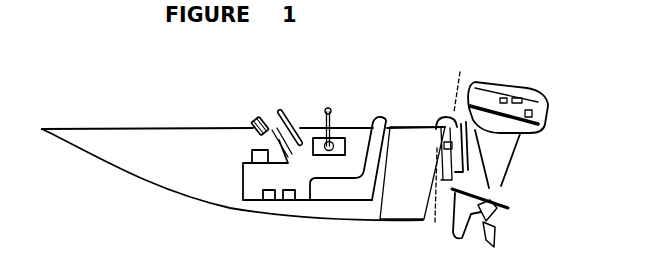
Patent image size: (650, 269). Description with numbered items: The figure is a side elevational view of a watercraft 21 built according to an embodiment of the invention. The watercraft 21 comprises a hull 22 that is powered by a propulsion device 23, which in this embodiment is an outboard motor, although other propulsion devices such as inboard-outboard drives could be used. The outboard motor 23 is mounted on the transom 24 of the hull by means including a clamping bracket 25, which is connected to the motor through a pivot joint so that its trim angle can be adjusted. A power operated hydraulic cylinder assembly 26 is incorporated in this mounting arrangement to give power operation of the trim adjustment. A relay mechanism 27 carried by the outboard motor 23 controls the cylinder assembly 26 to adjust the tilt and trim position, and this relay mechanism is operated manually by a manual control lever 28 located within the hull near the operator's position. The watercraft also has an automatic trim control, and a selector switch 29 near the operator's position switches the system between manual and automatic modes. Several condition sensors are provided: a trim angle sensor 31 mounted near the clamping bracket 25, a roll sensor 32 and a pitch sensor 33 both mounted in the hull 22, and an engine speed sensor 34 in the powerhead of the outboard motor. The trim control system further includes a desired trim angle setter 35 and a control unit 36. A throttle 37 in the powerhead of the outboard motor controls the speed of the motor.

The watercraft 21 is at (142, 128).
The hull 22 is at (128, 167).
The propulsion device 23 is at (502, 79).
The transom 24 is at (432, 180).
The clamping bracket 25 is at (443, 118).
The power operated hydraulic cylinder assembly 26 is at (435, 224).
The relay mechanism 27 is at (507, 98).
The manual control lever 28 is at (330, 106).
The selector switch 29 is at (272, 120).
The trim angle sensor 31 is at (460, 78).
The roll sensor 32 is at (287, 200).
The pitch sensor 33 is at (268, 200).
The engine speed sensor 34 is at (533, 114).
The desired trim angle setter 35 is at (255, 118).
The control unit 36 is at (253, 157).
The throttle 37 is at (540, 97).